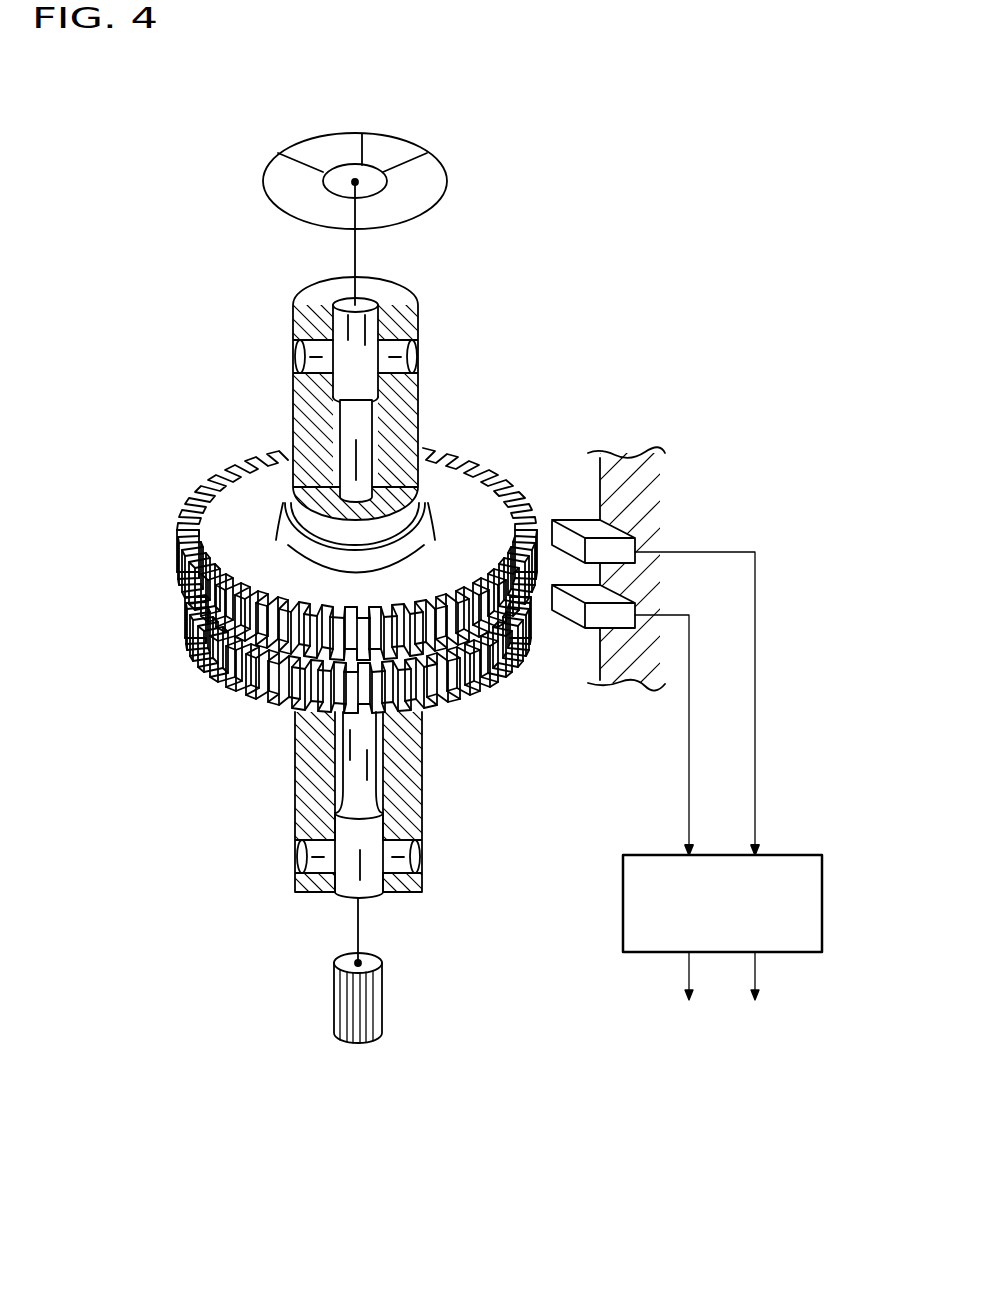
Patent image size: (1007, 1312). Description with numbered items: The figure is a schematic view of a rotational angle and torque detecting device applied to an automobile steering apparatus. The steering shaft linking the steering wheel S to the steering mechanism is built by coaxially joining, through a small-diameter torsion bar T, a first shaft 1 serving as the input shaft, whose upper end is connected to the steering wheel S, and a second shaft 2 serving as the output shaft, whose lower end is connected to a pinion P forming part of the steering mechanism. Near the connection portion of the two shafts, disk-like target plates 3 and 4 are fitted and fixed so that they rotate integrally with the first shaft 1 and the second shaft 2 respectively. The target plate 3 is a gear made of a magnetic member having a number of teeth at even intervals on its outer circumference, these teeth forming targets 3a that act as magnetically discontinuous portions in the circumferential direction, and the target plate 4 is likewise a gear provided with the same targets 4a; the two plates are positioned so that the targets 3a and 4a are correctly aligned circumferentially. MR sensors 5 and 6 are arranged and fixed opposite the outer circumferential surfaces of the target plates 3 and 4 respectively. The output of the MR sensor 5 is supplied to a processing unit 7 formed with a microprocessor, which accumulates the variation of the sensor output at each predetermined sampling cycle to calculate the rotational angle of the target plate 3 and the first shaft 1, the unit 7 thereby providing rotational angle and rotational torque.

The steering wheel S is at (447, 172).
The first shaft 1 is at (412, 397).
The torsion bar T is at (348, 440).
The target plate 3 is at (235, 500).
The targets 3a is at (183, 550).
The target plate 4 is at (292, 664).
The targets 4a is at (230, 688).
The second shaft 2 is at (415, 793).
The MR sensor 5 is at (572, 522).
The MR sensor 6 is at (565, 607).
The processing unit 7 is at (623, 895).
The pinion P is at (383, 990).